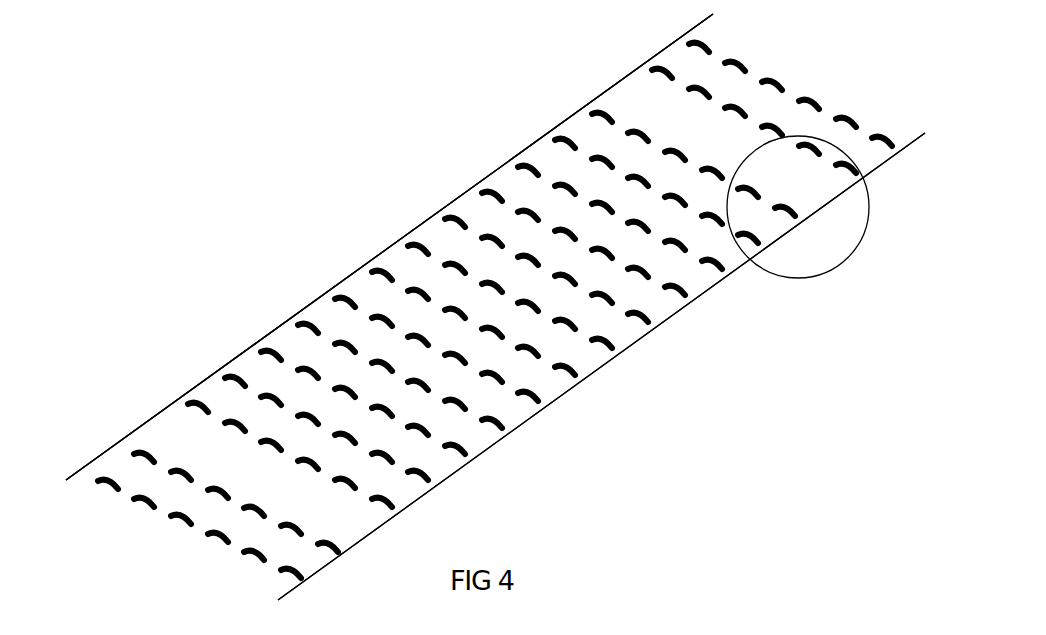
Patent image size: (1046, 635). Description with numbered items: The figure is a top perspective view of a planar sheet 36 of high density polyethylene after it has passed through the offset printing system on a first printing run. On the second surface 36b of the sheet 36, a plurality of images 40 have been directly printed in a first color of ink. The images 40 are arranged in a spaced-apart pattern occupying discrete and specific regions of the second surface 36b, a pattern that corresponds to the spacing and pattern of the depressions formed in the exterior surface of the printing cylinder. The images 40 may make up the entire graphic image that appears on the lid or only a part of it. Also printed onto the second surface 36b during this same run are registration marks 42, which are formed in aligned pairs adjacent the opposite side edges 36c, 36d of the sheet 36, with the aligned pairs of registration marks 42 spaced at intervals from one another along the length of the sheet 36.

The planar sheet 36 is at (755, 383).
The second surface 36b is at (433, 235).
The side edge 36c is at (373, 257).
The side edge 36d is at (670, 318).
The images 40 is at (568, 375).
The registration marks 42 is at (162, 417).